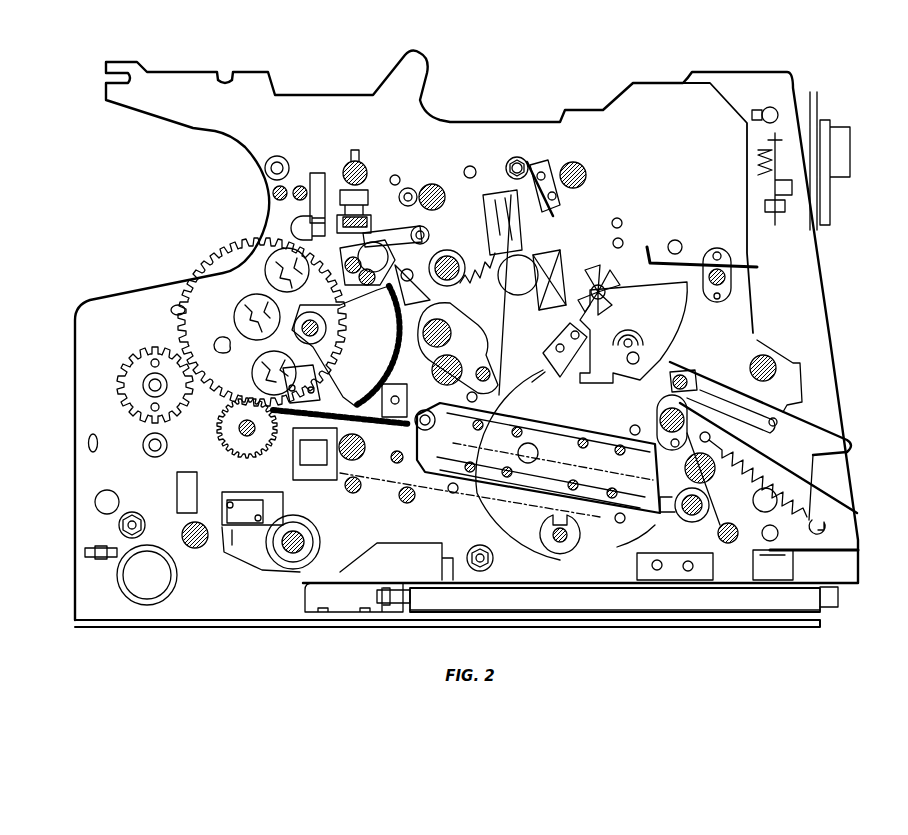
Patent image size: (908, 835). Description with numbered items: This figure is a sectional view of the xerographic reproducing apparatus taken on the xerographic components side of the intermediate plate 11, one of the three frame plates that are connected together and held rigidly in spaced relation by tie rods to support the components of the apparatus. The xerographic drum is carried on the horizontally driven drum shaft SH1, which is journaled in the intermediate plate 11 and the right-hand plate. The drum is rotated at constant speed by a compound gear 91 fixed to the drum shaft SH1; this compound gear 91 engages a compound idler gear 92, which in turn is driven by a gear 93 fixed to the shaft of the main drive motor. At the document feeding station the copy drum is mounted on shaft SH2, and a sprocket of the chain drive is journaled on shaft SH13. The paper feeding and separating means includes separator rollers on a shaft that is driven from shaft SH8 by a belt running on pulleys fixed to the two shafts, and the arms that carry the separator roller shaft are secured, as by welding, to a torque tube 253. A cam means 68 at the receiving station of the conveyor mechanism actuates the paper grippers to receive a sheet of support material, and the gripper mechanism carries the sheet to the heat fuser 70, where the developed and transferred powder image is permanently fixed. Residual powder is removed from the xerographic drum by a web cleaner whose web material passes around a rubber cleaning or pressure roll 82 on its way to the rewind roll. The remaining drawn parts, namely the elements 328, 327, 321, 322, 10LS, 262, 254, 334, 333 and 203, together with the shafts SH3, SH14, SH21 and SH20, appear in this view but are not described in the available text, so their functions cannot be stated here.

The intermediate plate 11 is at (223, 137).
The compound idler gear 92 is at (207, 297).
The compound gear 91 is at (300, 282).
The gear 93 is at (131, 357).
The drum shaft SH1 is at (320, 328).
The sector gear 328 is at (335, 386).
The cleaning or pressure roll 82 is at (466, 345).
The bracket 327 is at (312, 386).
The pivot 321 is at (400, 438).
The shaft SH3 is at (236, 431).
The gear 322 is at (238, 457).
The limit switch 10LS is at (265, 487).
The torque tube 253 is at (298, 530).
The shaft SH8 is at (305, 536).
The hub 262 is at (312, 543).
The bracket 254 is at (262, 557).
The shaft SH14 is at (433, 185).
The shaft SH13 is at (448, 258).
The shaft SH21 is at (545, 213).
The copy drum shaft SH2 is at (606, 298).
The heat fuser 70 is at (564, 397).
The shaft SH20 is at (650, 412).
The cam follower 334 is at (576, 535).
The cam means 68 is at (696, 522).
The spring hook 333 is at (822, 528).
The base rail 203 is at (840, 595).